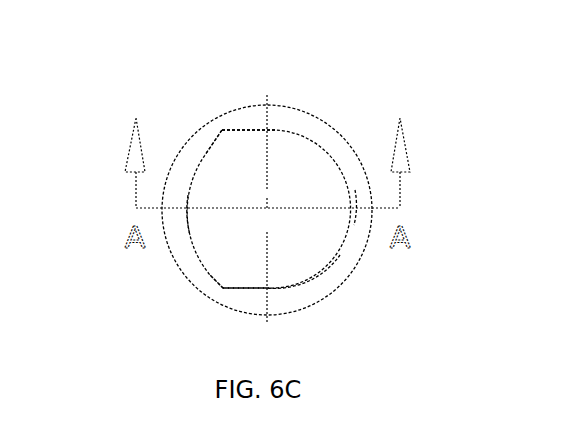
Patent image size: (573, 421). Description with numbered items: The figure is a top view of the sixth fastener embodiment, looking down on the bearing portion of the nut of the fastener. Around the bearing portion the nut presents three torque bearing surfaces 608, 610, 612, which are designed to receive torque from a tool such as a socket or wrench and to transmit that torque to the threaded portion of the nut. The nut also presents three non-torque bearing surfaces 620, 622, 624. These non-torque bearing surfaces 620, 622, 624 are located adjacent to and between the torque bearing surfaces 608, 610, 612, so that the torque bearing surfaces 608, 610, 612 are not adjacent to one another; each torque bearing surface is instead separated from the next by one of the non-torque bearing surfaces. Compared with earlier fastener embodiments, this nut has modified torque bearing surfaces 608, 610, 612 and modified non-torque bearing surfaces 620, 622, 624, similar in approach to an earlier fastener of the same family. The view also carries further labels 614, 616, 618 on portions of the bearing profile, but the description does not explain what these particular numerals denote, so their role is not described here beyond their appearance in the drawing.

The torque bearing surface 608 is at (203, 158).
The torque bearing surface 610 is at (349, 191).
The torque bearing surface 612 is at (208, 276).
The upper flat of inner bore 614 is at (220, 127).
The side wall portion 616 is at (367, 207).
The lower angled corner of inner bore 618 is at (217, 288).
The non-torque bearing surface 620 is at (317, 142).
The non-torque bearing surface 622 is at (322, 272).
The non-torque bearing surface 624 is at (186, 218).